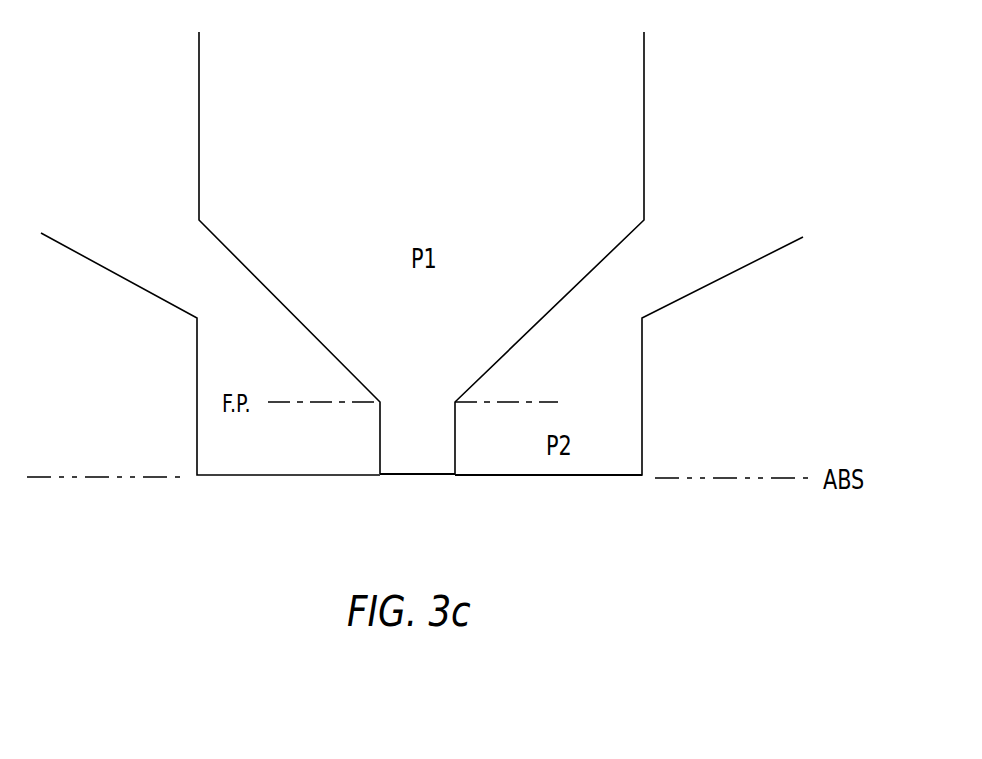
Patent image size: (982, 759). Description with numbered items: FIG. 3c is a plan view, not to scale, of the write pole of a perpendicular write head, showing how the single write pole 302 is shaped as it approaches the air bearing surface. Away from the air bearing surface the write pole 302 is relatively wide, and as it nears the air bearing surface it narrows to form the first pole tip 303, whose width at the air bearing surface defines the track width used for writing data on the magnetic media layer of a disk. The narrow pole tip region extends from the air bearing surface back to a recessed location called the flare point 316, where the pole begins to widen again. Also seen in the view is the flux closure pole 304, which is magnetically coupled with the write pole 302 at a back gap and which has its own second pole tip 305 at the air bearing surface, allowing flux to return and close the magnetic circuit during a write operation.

The write pole P1 302 is at (645, 172).
The first pole tip 303 is at (416, 477).
The flux closure pole P2 304 is at (643, 425).
The second pole tip 305 is at (552, 477).
The flare point 316 is at (545, 402).